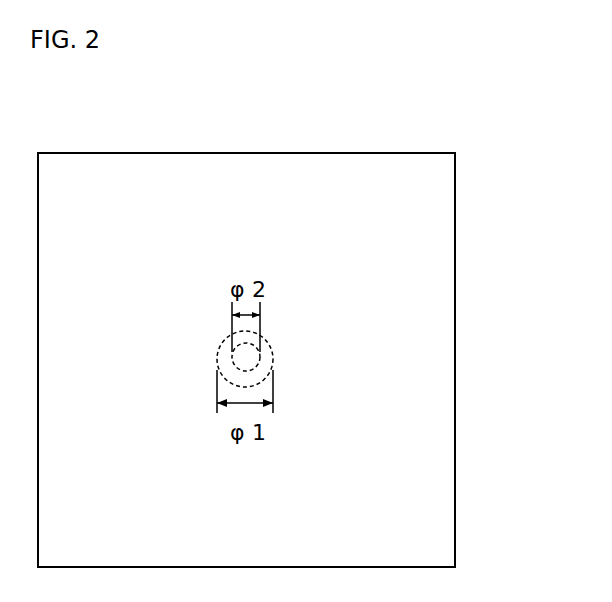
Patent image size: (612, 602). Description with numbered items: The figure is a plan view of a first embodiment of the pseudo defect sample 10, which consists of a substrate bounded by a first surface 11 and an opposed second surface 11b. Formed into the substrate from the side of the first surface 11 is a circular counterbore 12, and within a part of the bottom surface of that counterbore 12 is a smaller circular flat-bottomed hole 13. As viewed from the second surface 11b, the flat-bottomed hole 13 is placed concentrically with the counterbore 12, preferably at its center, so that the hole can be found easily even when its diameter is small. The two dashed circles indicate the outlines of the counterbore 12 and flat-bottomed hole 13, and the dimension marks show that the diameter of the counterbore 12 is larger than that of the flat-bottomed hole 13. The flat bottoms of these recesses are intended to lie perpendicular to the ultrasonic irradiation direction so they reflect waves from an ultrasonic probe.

The pseudo defect sample 10 is at (247, 148).
The first surface 11 is at (117, 167).
The second surface 11b is at (430, 267).
The counterbore 12 is at (272, 370).
The flat-bottomed hole 13 is at (255, 355).